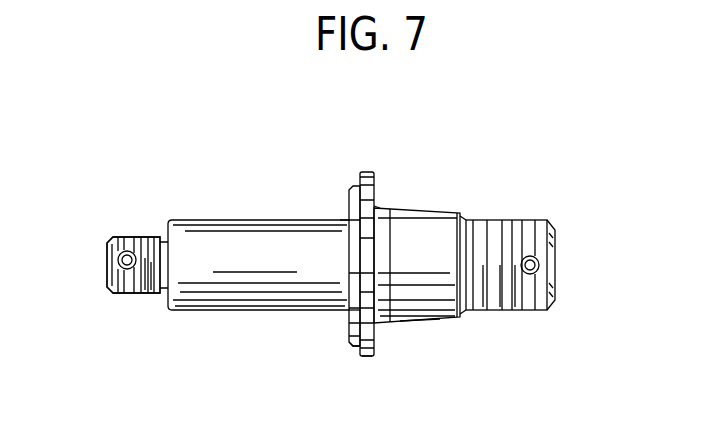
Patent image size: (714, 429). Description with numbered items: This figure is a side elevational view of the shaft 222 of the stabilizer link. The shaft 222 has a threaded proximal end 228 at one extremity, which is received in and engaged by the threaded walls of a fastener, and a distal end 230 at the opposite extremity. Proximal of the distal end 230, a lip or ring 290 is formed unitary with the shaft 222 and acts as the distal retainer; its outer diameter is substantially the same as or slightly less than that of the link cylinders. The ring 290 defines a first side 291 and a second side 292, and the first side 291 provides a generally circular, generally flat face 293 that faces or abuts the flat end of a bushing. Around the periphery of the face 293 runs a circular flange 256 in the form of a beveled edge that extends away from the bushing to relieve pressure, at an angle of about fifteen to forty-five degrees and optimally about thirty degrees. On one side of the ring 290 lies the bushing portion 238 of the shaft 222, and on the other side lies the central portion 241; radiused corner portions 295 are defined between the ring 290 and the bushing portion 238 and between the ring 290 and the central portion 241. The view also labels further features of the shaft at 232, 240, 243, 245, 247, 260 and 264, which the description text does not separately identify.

The shaft 222 is at (271, 152).
The proximal end 228 is at (138, 236).
The distal end 230 is at (520, 310).
The aperture 232 is at (112, 278).
The bushing portion 238 is at (253, 308).
The tapered portion lower edge 240 is at (420, 323).
The central portion 241 is at (379, 205).
The shoulder 243 is at (463, 320).
The edge of conical section 245 is at (377, 203).
The shoulder 247 is at (161, 232).
The circular flange 256 is at (353, 347).
The shaft section 260 is at (465, 215).
The neck 264 is at (165, 305).
The ring 290 is at (366, 162).
The first side 291 is at (347, 190).
The second side 292 is at (375, 353).
The face 293 is at (350, 320).
The radiused corner portions 295 is at (348, 215).